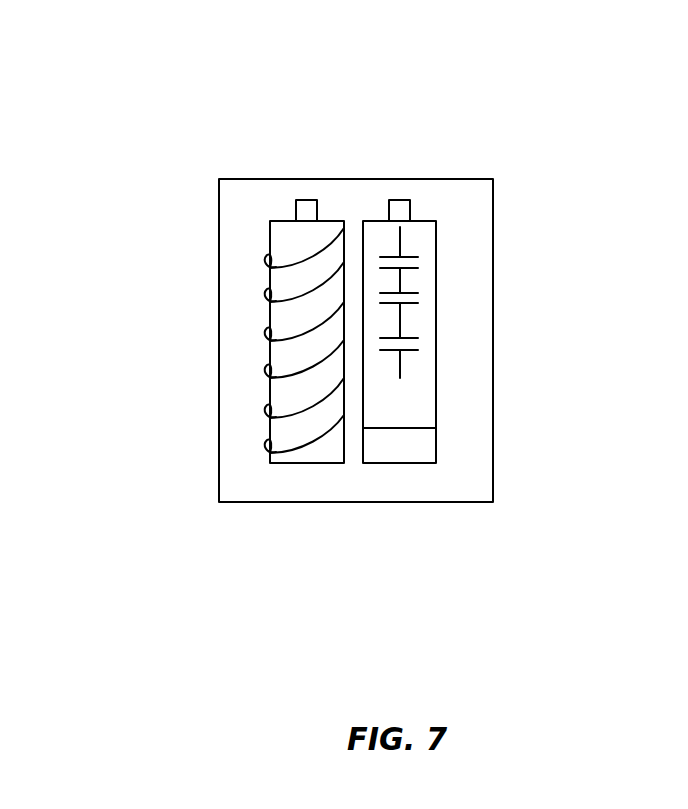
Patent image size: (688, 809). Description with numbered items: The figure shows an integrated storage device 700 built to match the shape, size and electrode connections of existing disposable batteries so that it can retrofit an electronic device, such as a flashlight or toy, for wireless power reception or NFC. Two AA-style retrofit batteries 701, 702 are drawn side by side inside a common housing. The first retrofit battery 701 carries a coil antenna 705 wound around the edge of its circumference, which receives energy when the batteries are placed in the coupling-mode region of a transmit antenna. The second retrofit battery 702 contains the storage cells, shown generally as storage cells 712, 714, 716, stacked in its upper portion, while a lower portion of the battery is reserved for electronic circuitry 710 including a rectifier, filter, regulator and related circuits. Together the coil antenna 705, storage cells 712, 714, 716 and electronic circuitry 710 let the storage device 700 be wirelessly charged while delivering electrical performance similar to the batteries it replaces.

The integrated storage device 700 is at (133, 95).
The retrofit battery 701 is at (302, 463).
The retrofit battery 702 is at (403, 463).
The coil antenna 705 is at (267, 268).
The electronic circuitry 710 is at (426, 446).
The storage cell 712 is at (418, 268).
The storage cell 714 is at (418, 303).
The storage cell 716 is at (418, 350).